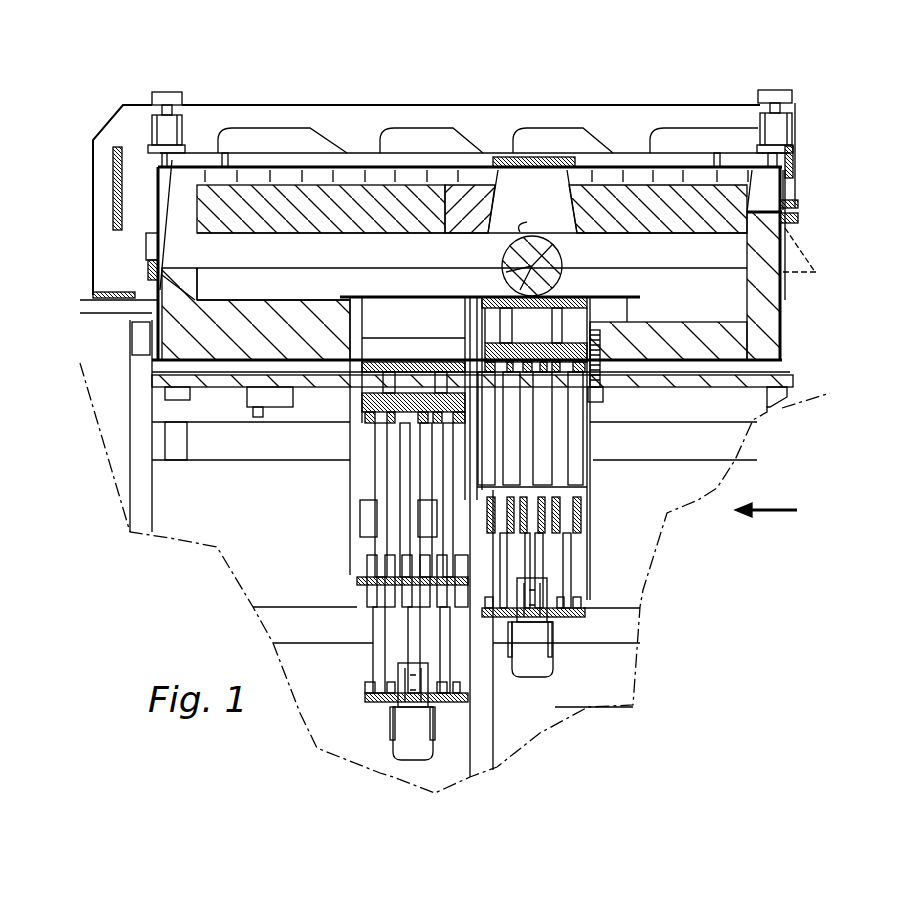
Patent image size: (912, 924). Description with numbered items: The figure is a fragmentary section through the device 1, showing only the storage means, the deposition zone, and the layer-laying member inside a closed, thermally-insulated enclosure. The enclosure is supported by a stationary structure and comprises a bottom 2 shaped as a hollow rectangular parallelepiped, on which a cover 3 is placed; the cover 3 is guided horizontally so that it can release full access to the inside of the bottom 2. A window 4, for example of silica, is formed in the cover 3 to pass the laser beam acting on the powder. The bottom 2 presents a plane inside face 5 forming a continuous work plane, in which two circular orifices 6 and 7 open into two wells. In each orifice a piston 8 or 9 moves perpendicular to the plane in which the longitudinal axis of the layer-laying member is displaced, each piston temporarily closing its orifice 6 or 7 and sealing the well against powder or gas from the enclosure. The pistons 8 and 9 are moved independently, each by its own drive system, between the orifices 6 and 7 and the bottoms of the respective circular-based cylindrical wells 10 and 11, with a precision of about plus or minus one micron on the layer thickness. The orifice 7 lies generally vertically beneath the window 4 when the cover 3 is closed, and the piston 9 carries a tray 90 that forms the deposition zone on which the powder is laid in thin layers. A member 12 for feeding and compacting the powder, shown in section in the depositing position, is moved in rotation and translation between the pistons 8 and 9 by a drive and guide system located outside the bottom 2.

The device 1 is at (688, 612).
The bottom 2 is at (775, 333).
The cover 3 is at (760, 197).
The window 4 is at (527, 200).
The plane inside face 5 is at (413, 290).
The circular orifice 6 is at (385, 310).
The circular orifice 7 is at (582, 322).
The piston 8 is at (410, 362).
The piston 9 is at (583, 297).
The cylindrical well 10 is at (400, 477).
The cylindrical well 11 is at (580, 438).
The member for feeding and compacting the powder 12 is at (503, 262).
The tray 90 is at (572, 345).